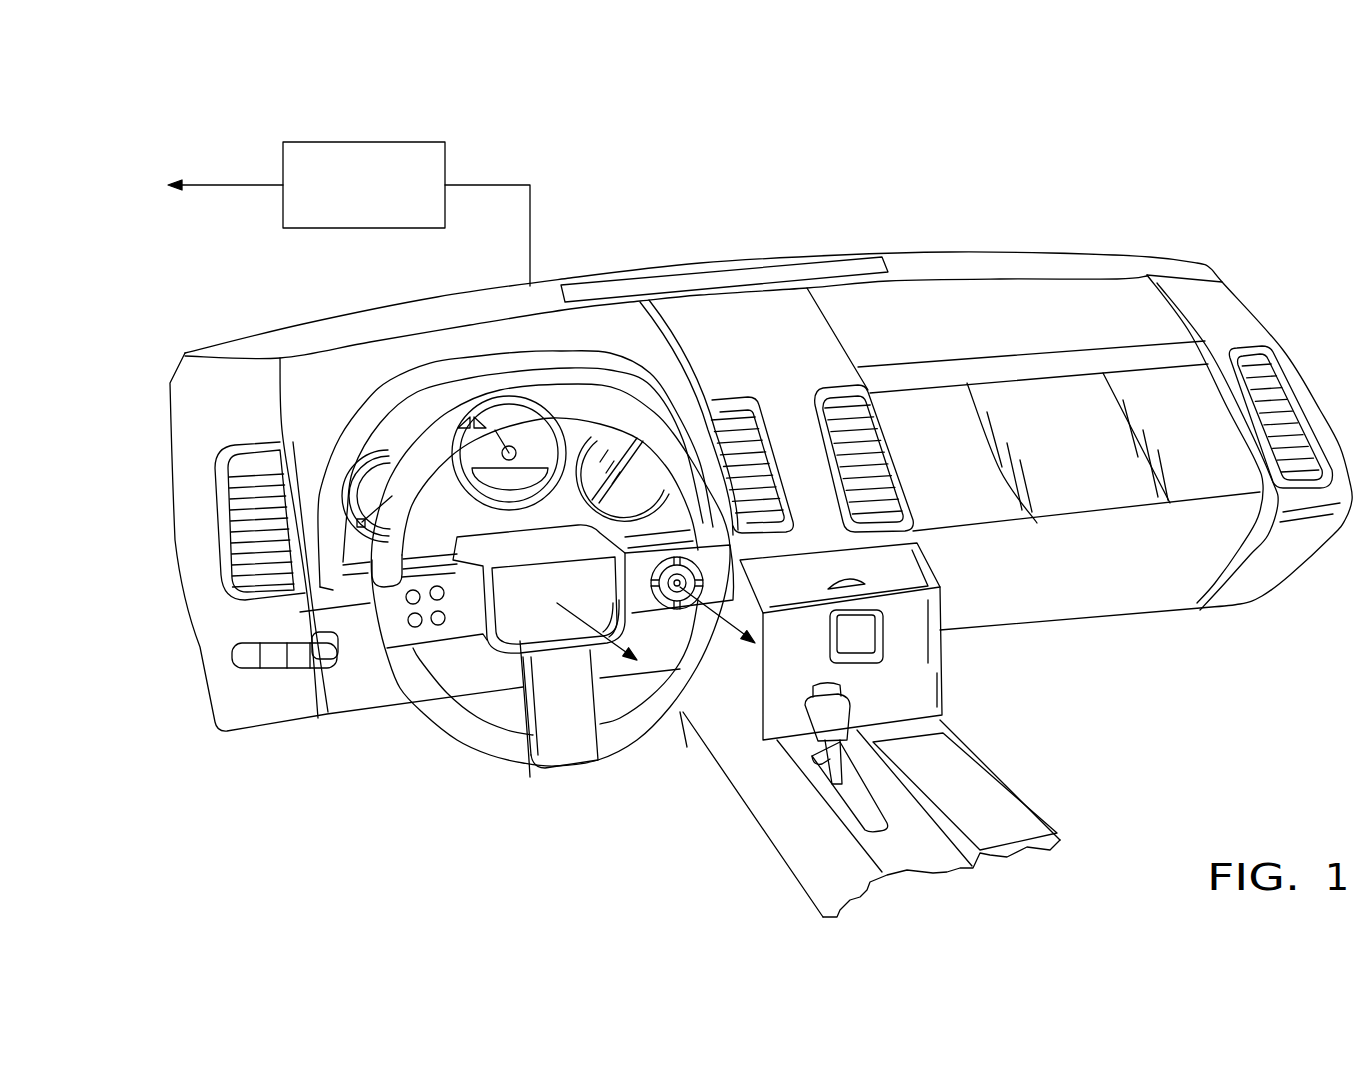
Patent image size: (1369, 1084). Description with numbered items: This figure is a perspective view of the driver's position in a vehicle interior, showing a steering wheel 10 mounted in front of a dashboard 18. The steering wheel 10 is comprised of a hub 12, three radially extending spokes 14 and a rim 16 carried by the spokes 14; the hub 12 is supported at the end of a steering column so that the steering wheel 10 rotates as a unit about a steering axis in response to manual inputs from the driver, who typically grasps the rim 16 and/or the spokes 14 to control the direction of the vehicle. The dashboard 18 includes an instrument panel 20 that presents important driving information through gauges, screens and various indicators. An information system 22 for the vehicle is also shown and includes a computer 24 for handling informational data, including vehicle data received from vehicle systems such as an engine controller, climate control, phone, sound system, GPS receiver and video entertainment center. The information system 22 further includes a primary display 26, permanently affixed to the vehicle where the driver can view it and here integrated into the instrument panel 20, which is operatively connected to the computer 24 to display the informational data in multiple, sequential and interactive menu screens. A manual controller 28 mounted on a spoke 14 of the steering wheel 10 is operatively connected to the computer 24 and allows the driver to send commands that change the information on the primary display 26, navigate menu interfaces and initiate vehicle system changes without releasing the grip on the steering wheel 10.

The steering wheel 10 is at (458, 748).
The hub 12 is at (577, 620).
The spokes 14 is at (713, 570).
The rim 16 is at (427, 700).
The dashboard 18 is at (297, 327).
The instrument panel 20 is at (447, 371).
The information system 22 is at (315, 178).
The computer 24 is at (351, 141).
The primary display 26 is at (610, 447).
The manual controller 28 is at (656, 625).